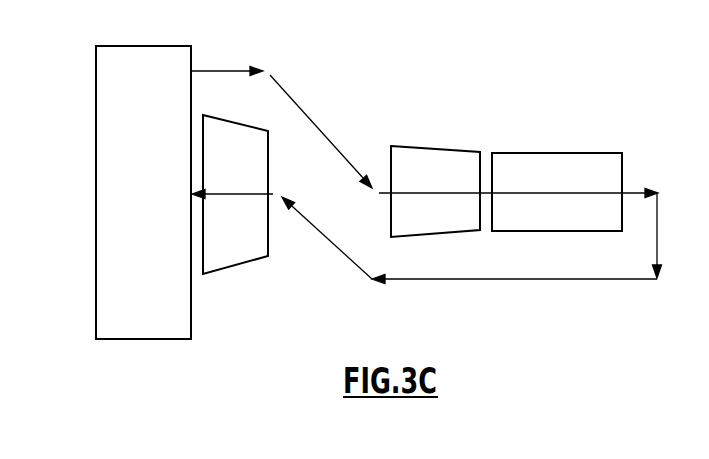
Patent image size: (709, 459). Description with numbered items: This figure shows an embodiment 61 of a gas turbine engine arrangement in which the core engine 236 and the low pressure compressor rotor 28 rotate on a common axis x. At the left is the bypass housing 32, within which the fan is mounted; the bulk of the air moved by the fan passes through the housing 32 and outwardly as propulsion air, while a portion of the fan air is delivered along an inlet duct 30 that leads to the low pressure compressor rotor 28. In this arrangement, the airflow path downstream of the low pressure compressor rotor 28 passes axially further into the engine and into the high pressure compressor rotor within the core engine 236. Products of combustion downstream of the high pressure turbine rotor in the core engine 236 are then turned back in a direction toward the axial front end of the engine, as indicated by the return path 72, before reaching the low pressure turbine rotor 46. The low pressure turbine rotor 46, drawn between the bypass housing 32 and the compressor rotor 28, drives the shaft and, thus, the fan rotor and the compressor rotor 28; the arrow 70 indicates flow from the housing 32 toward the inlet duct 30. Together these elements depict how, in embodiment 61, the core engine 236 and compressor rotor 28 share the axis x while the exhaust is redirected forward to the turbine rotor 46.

The bypass housing 32 is at (131, 53).
The emitted light 70 is at (240, 30).
The low pressure turbine rotor 46 is at (232, 250).
The inlet duct 30 is at (312, 118).
The embodiment 61 is at (506, 139).
The low pressure compressor rotor 28 is at (414, 157).
The core engine 236 is at (537, 165).
The common axis X is at (630, 188).
The reflected light path 72 is at (470, 280).